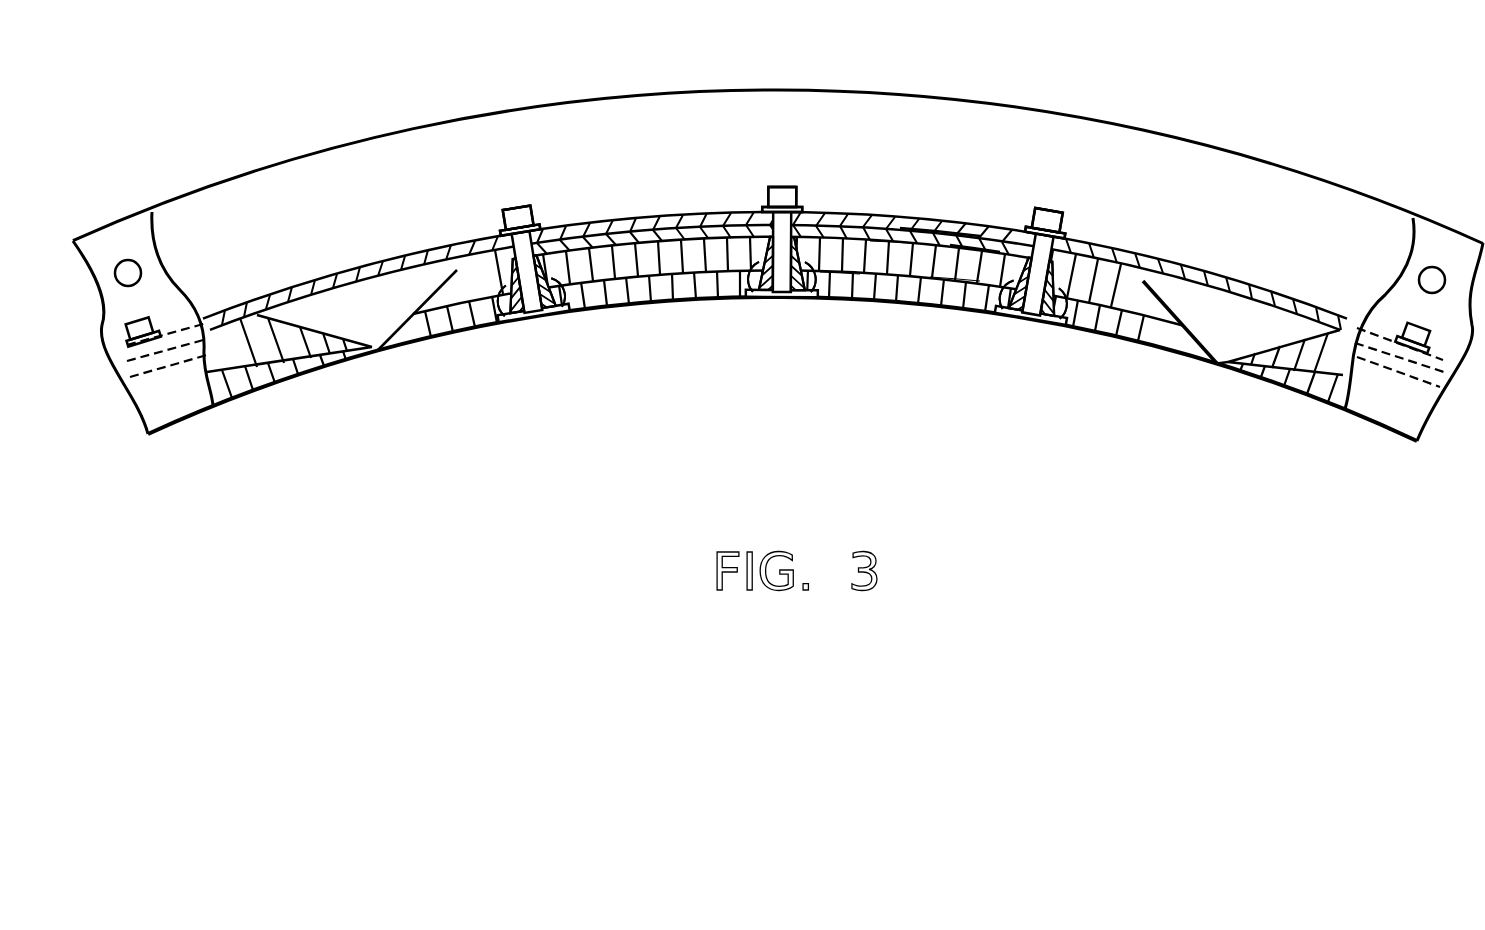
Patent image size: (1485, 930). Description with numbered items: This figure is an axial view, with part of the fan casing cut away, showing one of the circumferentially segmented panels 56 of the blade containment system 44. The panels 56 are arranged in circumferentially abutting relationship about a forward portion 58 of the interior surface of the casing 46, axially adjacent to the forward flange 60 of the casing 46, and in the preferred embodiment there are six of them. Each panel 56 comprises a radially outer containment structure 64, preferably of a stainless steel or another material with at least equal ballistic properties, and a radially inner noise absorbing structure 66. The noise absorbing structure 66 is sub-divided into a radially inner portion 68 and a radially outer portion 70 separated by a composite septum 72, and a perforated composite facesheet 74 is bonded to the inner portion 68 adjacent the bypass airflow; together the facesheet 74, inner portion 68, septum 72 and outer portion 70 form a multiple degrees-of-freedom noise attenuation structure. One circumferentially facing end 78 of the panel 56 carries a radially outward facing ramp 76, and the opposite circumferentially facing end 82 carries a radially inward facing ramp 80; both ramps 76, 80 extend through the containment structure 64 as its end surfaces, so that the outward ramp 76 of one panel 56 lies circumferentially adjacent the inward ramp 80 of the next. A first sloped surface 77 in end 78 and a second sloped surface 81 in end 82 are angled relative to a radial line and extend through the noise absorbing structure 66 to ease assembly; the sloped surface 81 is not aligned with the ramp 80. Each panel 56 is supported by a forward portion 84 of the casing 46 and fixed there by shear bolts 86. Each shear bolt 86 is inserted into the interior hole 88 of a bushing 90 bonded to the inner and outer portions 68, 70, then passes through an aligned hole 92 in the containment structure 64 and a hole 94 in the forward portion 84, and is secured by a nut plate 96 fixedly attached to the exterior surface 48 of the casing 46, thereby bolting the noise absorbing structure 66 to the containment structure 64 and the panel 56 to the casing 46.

The blade containment system 44 is at (1112, 84).
The casing 46 is at (1135, 268).
The exterior surface 48 is at (890, 226).
The circumferentially segmented panels 56 is at (273, 392).
The forward portion 58 is at (876, 225).
The forward flange 60 is at (113, 237).
The containment structure 64 is at (898, 232).
The noise absorbing structure 66 is at (875, 302).
The inner portion 68 is at (955, 295).
The outer portion 70 is at (960, 238).
The septum 72 is at (893, 285).
The perforated facesheet 74 is at (843, 300).
The radially outward facing ramp 76 is at (440, 252).
The first sloped surface 77 is at (432, 280).
The circumferentially facing end 78 is at (378, 343).
The radially inward facing ramp 80 is at (1160, 268).
The second sloped surface 81 is at (1165, 290).
The opposite circumferentially facing end 82 is at (1195, 355).
The forward portion of casing 84 is at (975, 237).
The shear bolts 86 is at (548, 305).
The interior hole 88 is at (543, 316).
The bushing 90 is at (578, 300).
The hole 92 is at (544, 230).
The hole 94 is at (529, 212).
The nut plate 96 is at (152, 318).